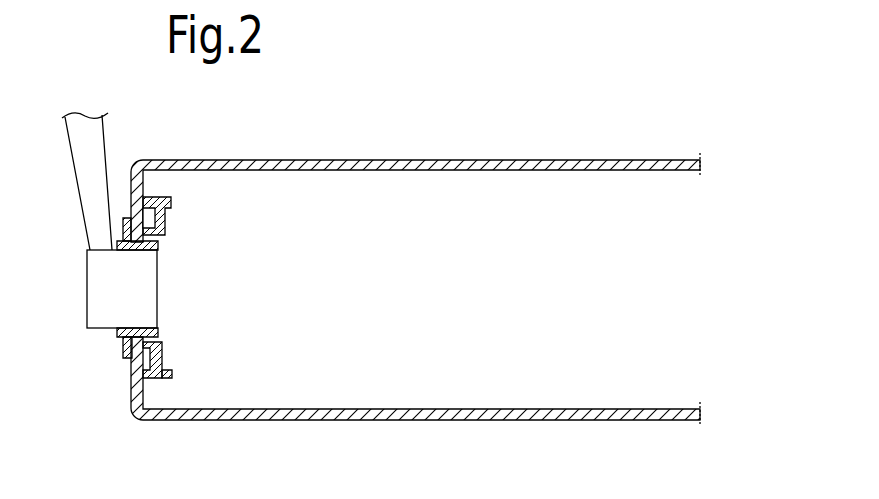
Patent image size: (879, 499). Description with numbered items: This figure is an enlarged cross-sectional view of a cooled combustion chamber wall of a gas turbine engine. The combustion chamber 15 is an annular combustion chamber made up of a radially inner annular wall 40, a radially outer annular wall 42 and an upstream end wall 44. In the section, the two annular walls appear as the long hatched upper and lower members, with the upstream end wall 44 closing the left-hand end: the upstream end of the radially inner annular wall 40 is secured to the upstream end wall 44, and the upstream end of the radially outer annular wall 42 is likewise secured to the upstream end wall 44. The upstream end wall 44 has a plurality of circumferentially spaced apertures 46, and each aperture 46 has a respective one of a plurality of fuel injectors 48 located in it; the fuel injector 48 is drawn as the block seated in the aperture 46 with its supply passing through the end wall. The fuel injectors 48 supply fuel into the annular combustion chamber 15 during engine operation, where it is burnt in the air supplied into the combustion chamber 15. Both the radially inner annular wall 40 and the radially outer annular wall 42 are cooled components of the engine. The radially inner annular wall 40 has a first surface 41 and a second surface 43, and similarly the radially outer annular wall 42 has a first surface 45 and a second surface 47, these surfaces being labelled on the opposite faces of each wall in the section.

The combustion chamber 15 is at (568, 108).
The radially inner annular wall 40 is at (453, 398).
The first surface 41 is at (588, 420).
The radially outer annular wall 42 is at (452, 176).
The second surface 43 is at (415, 398).
The upstream end wall 44 is at (132, 389).
The first surface 45 is at (426, 176).
The aperture 46 is at (158, 238).
The second surface 47 is at (665, 170).
The fuel injector 48 is at (108, 302).